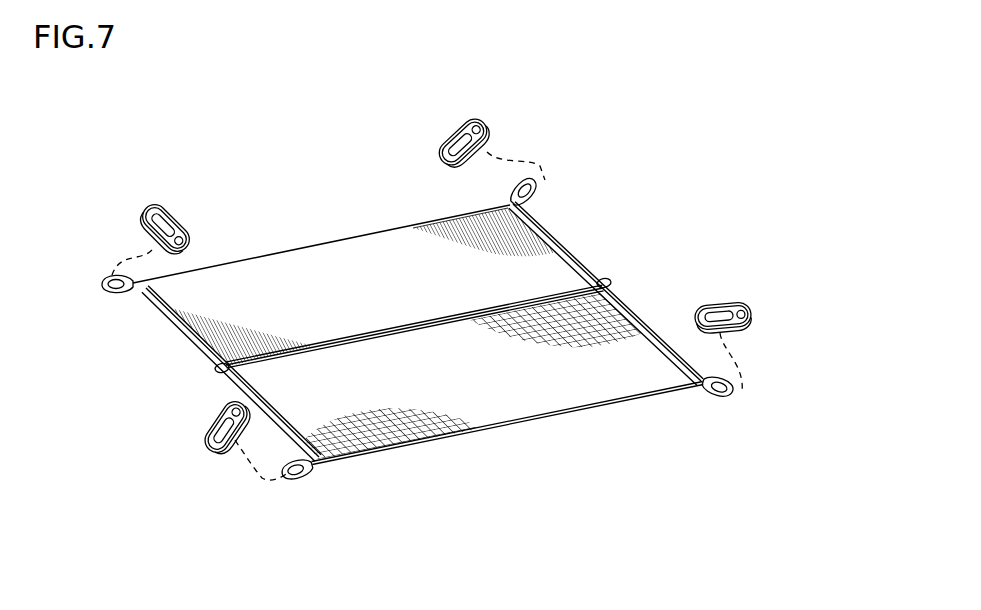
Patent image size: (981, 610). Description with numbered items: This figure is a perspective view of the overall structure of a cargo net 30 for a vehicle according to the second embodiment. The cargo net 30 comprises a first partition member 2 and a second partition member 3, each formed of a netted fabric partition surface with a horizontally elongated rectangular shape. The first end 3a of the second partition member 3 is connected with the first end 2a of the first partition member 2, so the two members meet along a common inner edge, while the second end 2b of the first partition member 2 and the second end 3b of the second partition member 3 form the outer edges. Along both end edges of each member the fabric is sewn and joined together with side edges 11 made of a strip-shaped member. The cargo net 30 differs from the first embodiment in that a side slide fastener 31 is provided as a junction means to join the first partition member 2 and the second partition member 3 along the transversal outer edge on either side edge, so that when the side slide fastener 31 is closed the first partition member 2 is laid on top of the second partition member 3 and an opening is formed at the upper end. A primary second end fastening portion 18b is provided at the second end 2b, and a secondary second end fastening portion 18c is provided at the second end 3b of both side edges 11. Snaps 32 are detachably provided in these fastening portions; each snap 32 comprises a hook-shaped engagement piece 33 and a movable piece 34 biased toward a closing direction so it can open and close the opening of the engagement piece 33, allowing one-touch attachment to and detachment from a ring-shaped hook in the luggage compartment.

The first partition member 2 is at (343, 297).
The first end of the first partition member 2a is at (413, 392).
The second end of the first partition member 2b is at (363, 232).
The second partition member 3 is at (498, 374).
The first end of the second partition member 3a is at (427, 326).
The second end of the second partition member 3b is at (604, 403).
The side edge 11 is at (194, 312).
The primary second end fastening portion 18b is at (536, 187).
The secondary second end fastening portion 18c is at (296, 483).
The cargo net 30 is at (665, 180).
The side slide fastener 31 is at (398, 350).
The snap 32 is at (464, 275).
The hook-shaped engagement piece 33 is at (748, 307).
The movable piece 34 is at (722, 334).